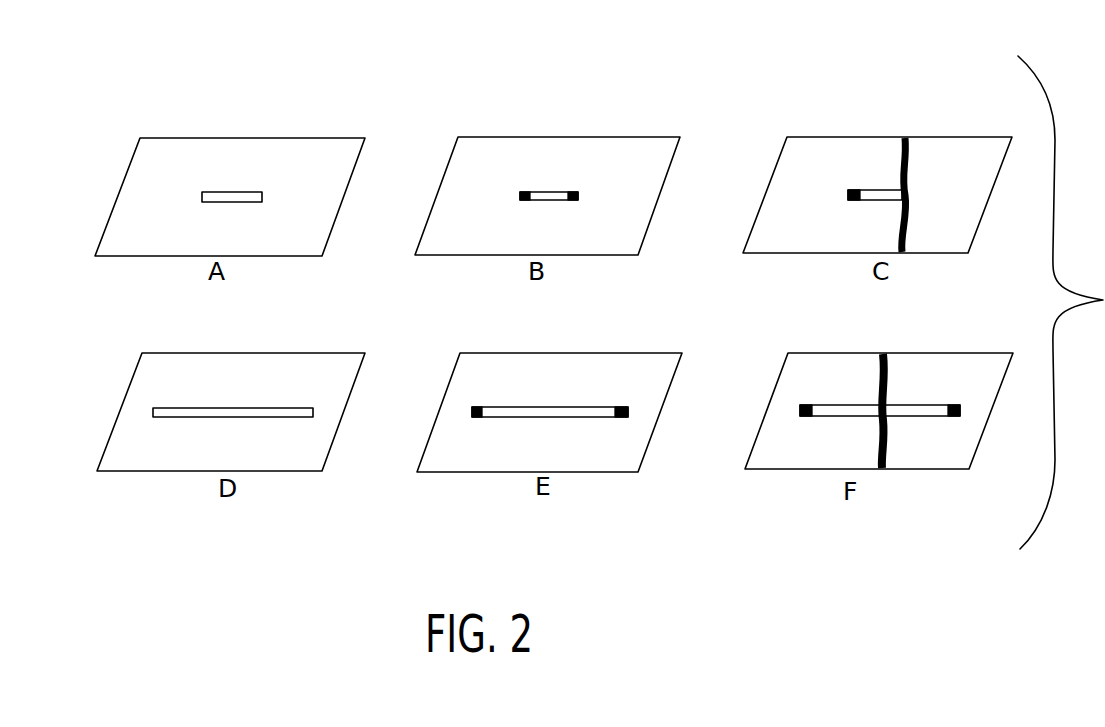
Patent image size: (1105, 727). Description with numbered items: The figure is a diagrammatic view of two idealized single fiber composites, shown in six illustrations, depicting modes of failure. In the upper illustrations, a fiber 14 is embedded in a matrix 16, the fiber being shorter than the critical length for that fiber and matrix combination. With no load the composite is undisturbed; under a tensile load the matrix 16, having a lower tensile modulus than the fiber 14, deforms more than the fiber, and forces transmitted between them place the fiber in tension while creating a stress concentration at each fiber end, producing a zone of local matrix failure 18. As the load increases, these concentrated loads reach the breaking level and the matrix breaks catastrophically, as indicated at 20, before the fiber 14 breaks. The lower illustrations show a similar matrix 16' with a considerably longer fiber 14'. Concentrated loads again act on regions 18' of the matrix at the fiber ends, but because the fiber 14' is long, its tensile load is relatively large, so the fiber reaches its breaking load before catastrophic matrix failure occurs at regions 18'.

The fiber 14 is at (398, 132).
The matrix 16 is at (388, 166).
The zone of local matrix failure 18 is at (523, 137).
The catastrophic matrix break 20 is at (912, 150).
The fiber 14' is at (233, 354).
The matrix 16' is at (238, 379).
The regions of the matrix at the ends of the fiber 18' is at (535, 475).